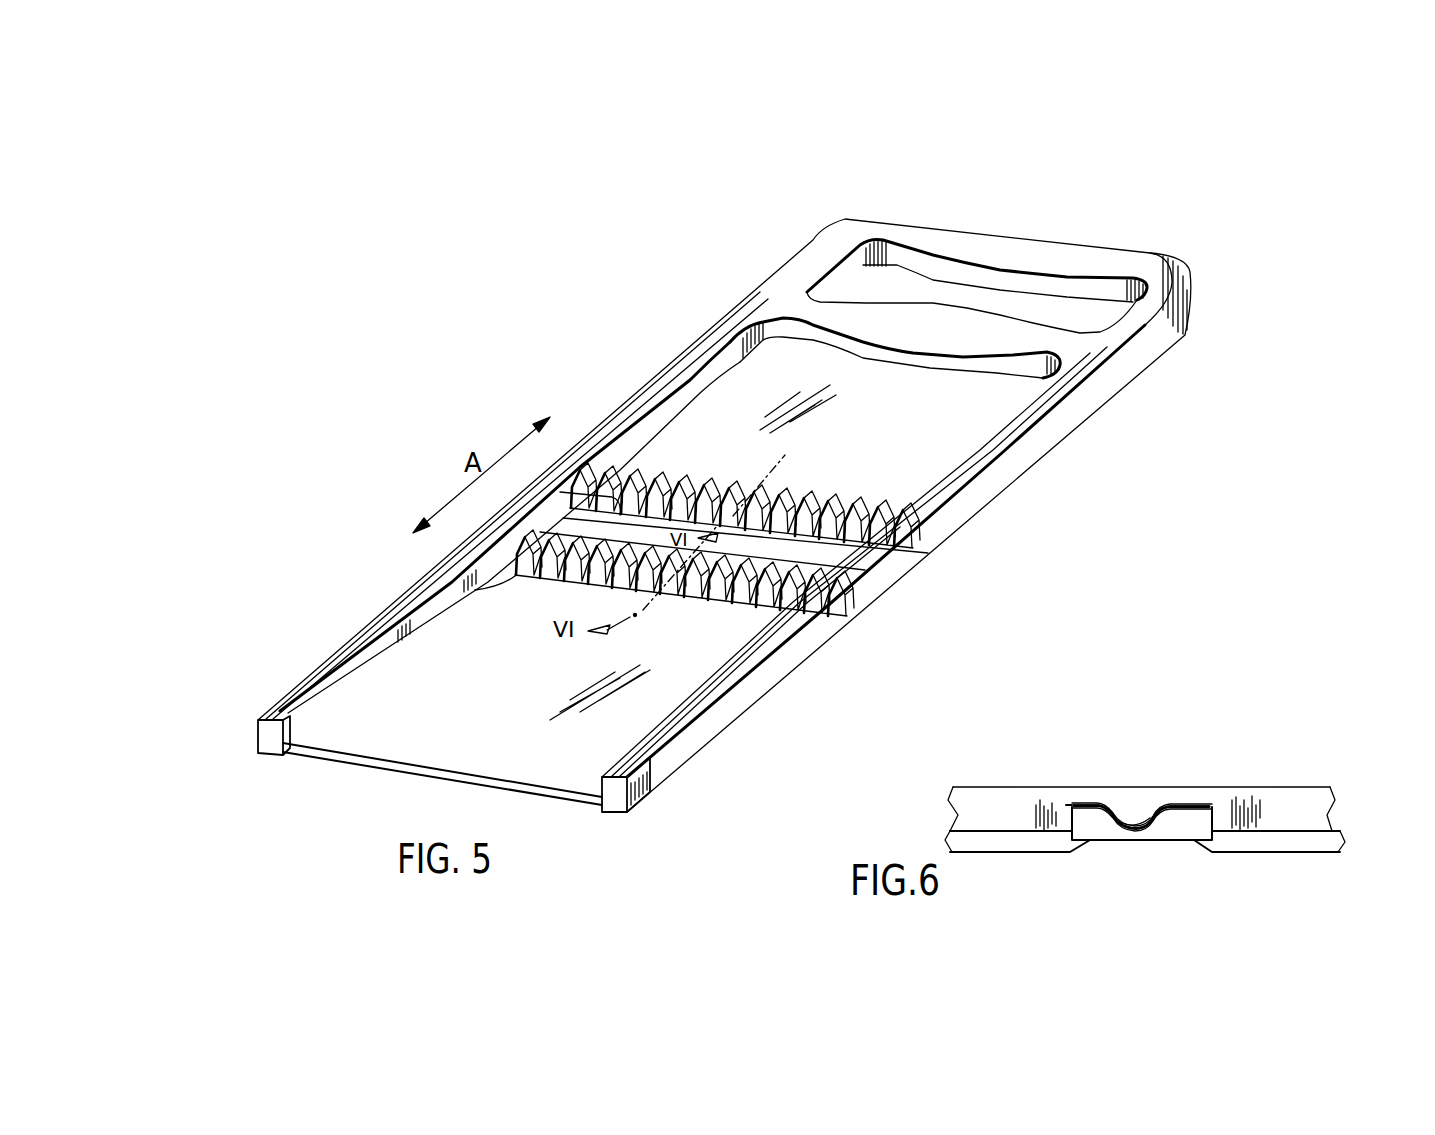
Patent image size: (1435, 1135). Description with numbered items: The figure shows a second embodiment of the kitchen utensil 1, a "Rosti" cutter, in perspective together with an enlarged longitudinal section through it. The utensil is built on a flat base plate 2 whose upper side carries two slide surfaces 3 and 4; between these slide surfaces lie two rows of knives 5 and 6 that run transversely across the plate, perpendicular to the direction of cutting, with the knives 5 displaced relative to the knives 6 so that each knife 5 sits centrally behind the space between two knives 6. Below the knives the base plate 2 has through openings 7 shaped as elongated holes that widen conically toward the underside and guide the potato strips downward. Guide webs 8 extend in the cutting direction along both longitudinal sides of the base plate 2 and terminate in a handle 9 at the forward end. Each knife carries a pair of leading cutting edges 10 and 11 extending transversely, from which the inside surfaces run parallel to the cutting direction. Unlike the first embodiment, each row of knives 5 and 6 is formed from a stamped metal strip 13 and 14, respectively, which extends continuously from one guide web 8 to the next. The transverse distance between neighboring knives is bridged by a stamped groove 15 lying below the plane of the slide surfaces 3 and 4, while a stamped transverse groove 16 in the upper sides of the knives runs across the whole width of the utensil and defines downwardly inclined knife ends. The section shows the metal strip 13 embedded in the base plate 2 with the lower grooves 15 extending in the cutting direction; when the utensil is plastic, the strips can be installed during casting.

In FIG. 5, the kitchen utensil 1 is at (1020, 503).
In FIG. 6, the kitchen utensil 1 is at (1338, 803).
In FIG. 5, the base plate 2 is at (757, 408).
In FIG. 6, the base plate 2 is at (1273, 854).
In FIG. 5, the slide surface 3 is at (943, 432).
In FIG. 5, the slide surface 4 is at (580, 742).
In FIG. 6, the slide surface 4 is at (1010, 840).
In FIG. 5, the knives 5 is at (733, 597).
In FIG. 6, the knives 5 is at (1097, 804).
In FIG. 5, the knives 6 is at (895, 530).
In FIG. 5, the through openings 7 is at (880, 548).
In FIG. 5, the guide webs 8 is at (357, 636).
In FIG. 6, the guide webs 8 is at (1018, 812).
In FIG. 5, the handle 9 is at (1030, 262).
In FIG. 6, the cutting edge 10 is at (1066, 805).
In FIG. 6, the cutting edge 11 is at (1223, 806).
In FIG. 5, the metal strip 13 is at (797, 600).
In FIG. 6, the metal strip 13 is at (1185, 822).
In FIG. 5, the metal strip 14 is at (653, 473).
In FIG. 5, the stamped groove 15 is at (525, 503).
In FIG. 6, the stamped groove 15 is at (1120, 845).
In FIG. 5, the stamped transverse groove 16 is at (765, 478).
In FIG. 6, the stamped transverse groove 16 is at (1137, 811).